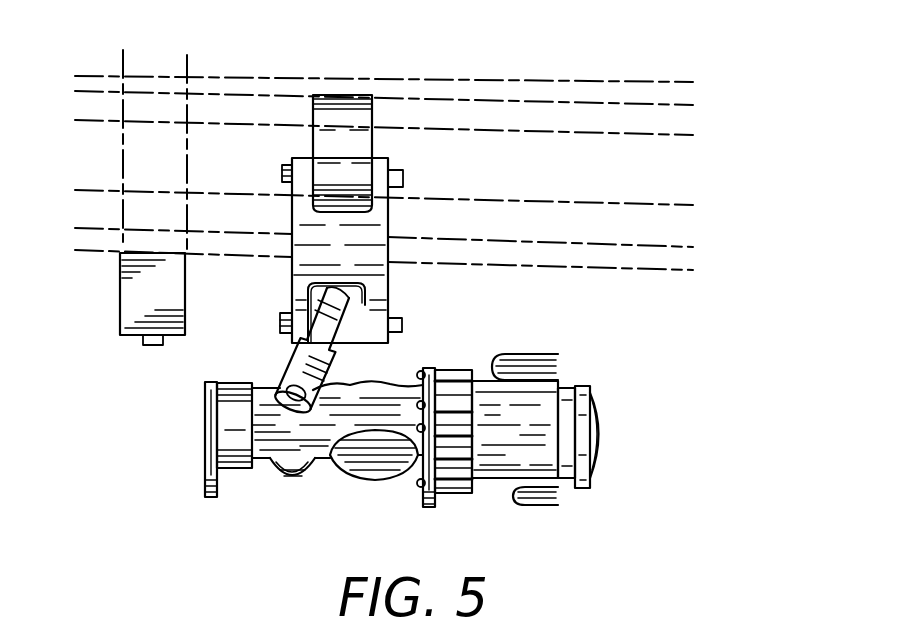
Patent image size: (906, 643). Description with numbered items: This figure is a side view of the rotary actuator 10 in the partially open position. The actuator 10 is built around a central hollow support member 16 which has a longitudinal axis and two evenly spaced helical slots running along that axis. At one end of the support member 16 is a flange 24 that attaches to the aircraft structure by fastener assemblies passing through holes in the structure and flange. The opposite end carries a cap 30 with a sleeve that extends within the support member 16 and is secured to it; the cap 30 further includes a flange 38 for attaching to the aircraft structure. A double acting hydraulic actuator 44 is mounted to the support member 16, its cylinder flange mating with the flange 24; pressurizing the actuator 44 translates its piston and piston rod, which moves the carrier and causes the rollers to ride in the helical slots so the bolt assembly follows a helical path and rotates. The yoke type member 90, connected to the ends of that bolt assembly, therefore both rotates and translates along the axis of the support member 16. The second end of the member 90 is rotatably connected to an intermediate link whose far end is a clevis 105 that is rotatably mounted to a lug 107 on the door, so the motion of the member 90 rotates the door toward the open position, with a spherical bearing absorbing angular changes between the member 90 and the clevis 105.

The rotary actuator 10 is at (640, 427).
The central hollow support member 16 is at (327, 462).
The flange 24 is at (428, 510).
The cap 30 is at (205, 444).
The flange 38 is at (207, 497).
The double acting hydraulic actuator 44 is at (594, 484).
The yoke type member 90 is at (290, 362).
The clevis 105 is at (390, 293).
The lug 107 is at (348, 95).